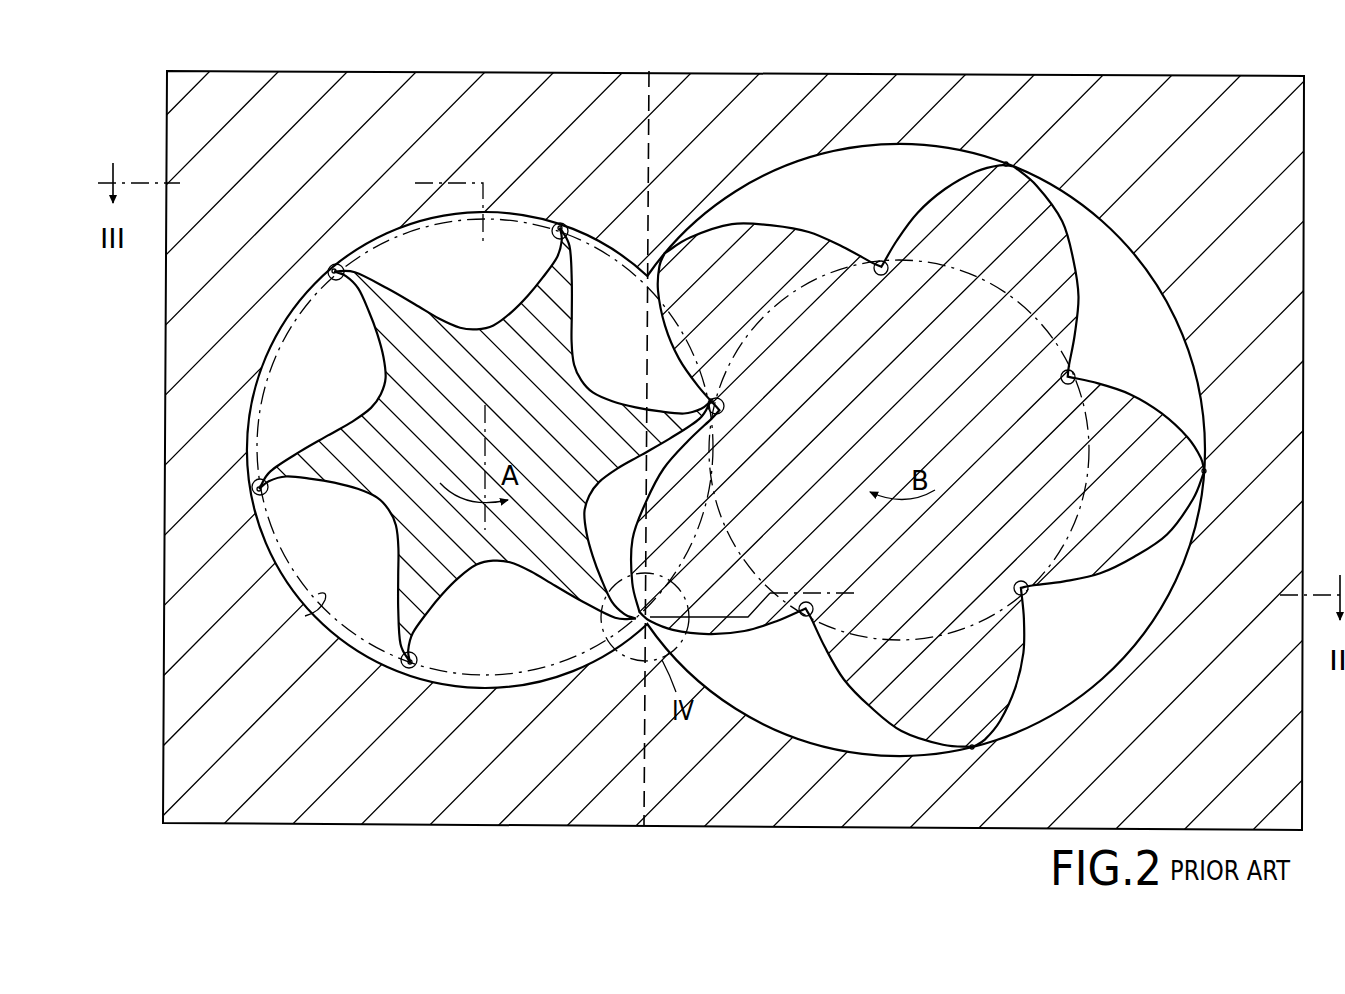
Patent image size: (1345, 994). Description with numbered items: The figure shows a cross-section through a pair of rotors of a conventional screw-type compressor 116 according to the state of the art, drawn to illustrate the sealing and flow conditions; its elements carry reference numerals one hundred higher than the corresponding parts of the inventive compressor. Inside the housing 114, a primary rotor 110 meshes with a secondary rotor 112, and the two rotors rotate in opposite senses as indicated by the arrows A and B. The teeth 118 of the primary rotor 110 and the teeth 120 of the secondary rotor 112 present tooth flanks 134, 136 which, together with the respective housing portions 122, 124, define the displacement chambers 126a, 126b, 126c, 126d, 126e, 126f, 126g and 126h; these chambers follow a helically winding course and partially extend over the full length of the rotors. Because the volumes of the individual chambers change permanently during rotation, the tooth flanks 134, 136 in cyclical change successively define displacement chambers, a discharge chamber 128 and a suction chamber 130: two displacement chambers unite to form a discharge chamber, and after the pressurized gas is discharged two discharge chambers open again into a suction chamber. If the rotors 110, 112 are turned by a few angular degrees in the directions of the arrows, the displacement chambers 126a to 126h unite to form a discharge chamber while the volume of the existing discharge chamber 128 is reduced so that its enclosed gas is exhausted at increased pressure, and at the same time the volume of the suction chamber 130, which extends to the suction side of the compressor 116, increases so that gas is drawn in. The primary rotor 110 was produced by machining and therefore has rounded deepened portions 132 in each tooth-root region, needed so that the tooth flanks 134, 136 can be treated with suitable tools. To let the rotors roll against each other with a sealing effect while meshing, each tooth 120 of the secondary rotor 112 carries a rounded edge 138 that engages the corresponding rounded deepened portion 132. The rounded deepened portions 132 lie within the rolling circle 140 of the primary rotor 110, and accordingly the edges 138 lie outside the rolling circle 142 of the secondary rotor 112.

The primary rotor 110 is at (963, 400).
The secondary rotor 112 is at (450, 387).
The housing 114 is at (770, 94).
The screw-type compressor 116 is at (155, 337).
The teeth of primary rotor 118 is at (1030, 190).
The teeth of secondary rotor 120 is at (324, 284).
The housing portion 122 is at (1158, 766).
The housing portion 124 is at (354, 786).
The displacement chamber 126a is at (876, 198).
The displacement chamber 126b is at (1146, 349).
The displacement chamber 126c is at (1104, 649).
The displacement chamber 126d is at (807, 683).
The displacement chamber 126e is at (479, 281).
The displacement chamber 126f is at (340, 374).
The displacement chamber 126g is at (366, 546).
The displacement chamber 126h is at (529, 643).
The discharge chamber 128 is at (628, 538).
The suction chamber 130 is at (624, 336).
The rounded deepened portions 132 is at (881, 276).
The tooth flank 134 is at (950, 186).
The tooth flank 136 is at (1080, 273).
The rounded edge 138 is at (333, 262).
The rolling circle of primary rotor 140 is at (728, 524).
The rolling circle of secondary rotor 142 is at (305, 615).